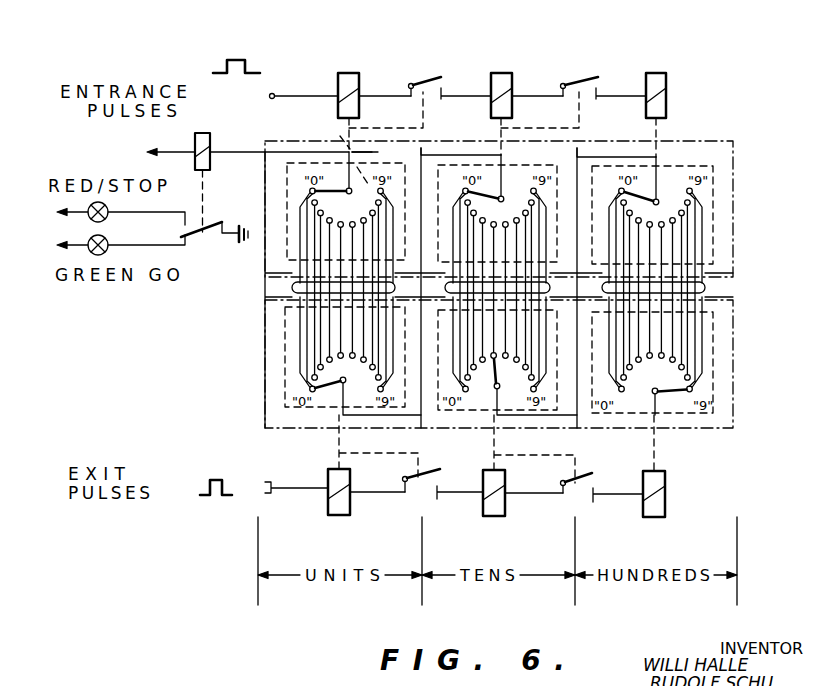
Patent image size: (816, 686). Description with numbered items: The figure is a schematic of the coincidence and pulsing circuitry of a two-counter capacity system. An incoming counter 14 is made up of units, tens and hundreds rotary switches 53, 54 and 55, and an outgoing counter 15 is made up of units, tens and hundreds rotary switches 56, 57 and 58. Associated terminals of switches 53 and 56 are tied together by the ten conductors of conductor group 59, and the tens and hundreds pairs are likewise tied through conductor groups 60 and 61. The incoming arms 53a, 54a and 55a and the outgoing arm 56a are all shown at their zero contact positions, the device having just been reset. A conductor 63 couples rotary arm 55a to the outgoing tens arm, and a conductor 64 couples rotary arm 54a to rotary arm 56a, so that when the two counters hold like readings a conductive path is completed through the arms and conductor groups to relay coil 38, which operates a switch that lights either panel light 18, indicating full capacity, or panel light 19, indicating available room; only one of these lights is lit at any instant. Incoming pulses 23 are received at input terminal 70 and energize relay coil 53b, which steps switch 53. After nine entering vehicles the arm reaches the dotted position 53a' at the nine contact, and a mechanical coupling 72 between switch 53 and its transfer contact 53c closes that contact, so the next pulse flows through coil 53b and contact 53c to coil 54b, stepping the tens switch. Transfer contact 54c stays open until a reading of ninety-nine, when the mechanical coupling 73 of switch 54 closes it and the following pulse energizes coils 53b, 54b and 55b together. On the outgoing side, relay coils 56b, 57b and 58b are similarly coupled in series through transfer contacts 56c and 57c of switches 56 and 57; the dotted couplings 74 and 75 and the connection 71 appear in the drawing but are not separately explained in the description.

The incoming counter 14 is at (733, 178).
The outgoing counter 15 is at (737, 377).
The panel light 18 is at (122, 160).
The panel light 19 is at (125, 310).
The incoming pulses 23 is at (248, 50).
The relay coil 38 is at (209, 138).
The units rotary switch 53 is at (287, 166).
The rotary arm 53a is at (346, 269).
The dotted line position of rotary arm 53a' is at (340, 153).
The relay coil 53b is at (349, 73).
The transfer contact 53c is at (420, 77).
The tens rotary switch 54 is at (497, 204).
The rotary arm 54a is at (485, 206).
The relay coil 54b is at (502, 73).
The transfer contact 54c is at (578, 76).
The hundreds rotary switch 55 is at (690, 166).
The rotary arm 55a is at (641, 210).
The relay coil 55b is at (657, 73).
The units rotary switch 56 is at (283, 361).
The rotary arm 56a is at (365, 384).
The relay coil 56b is at (351, 507).
The transfer contact 56c is at (433, 454).
The tens rotary switch 57 is at (472, 411).
The relay coil 57b is at (505, 507).
The transfer contact 57c is at (578, 477).
The hundreds rotary switch 58 is at (717, 343).
The relay coil 58b is at (665, 508).
The conductor group 59 is at (292, 287).
The conductor group 60 is at (487, 289).
The conductor group 61 is at (705, 289).
The conductor 63 is at (620, 157).
The conductor 64 is at (460, 157).
The input terminal 70 is at (273, 93).
The units wiper connection 71 is at (380, 154).
The mechanical coupling 72 is at (386, 122).
The mechanical coupling 73 is at (540, 123).
The units exit relay linkage 74 is at (378, 447).
The tens exit relay linkage 75 is at (534, 449).